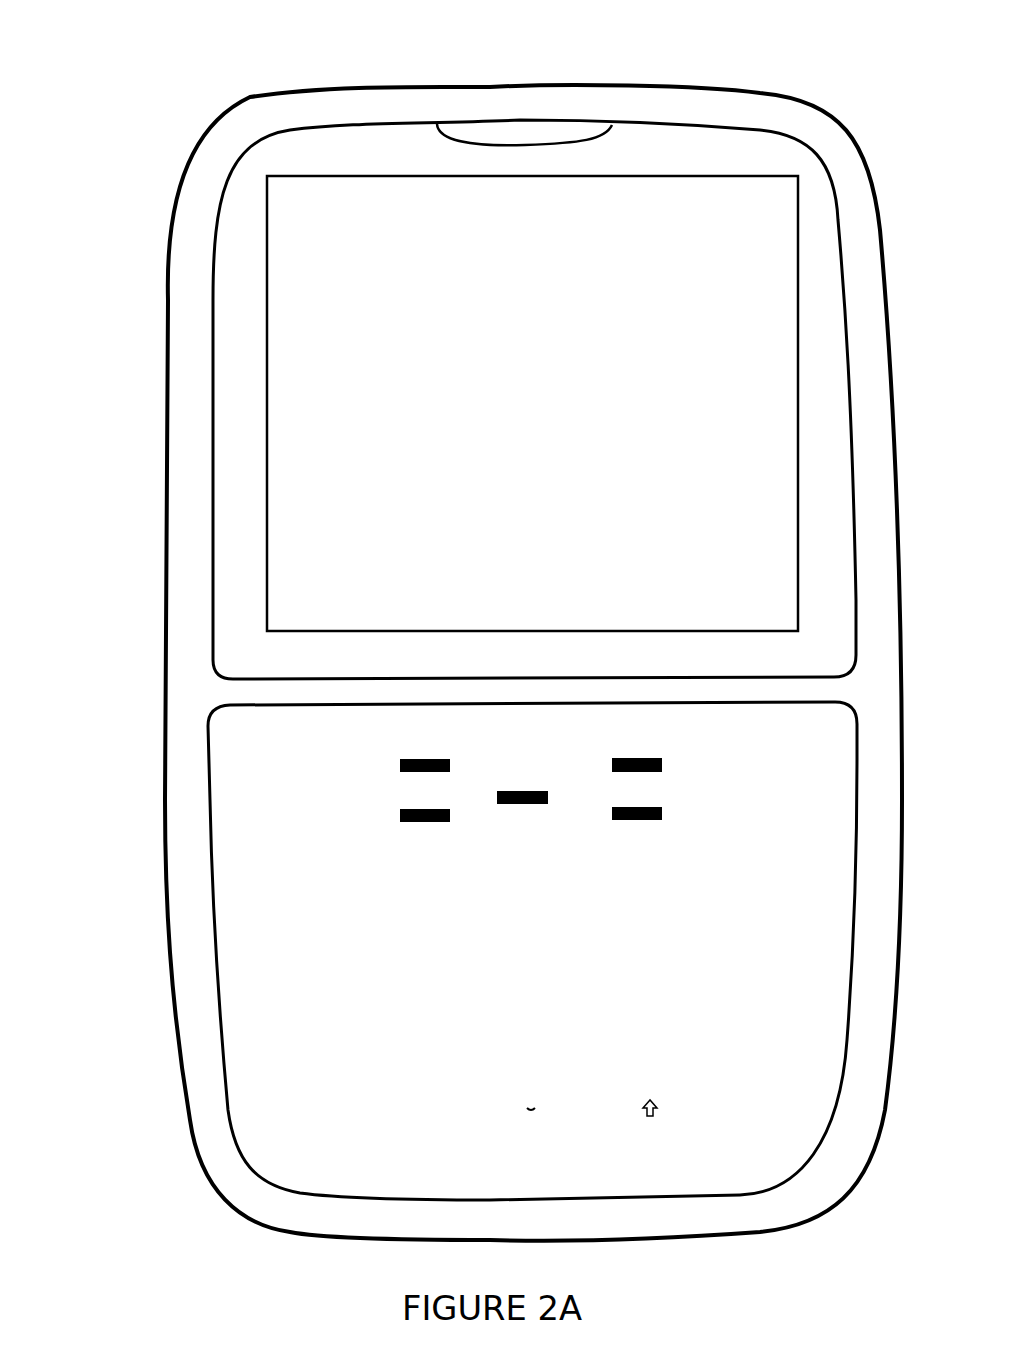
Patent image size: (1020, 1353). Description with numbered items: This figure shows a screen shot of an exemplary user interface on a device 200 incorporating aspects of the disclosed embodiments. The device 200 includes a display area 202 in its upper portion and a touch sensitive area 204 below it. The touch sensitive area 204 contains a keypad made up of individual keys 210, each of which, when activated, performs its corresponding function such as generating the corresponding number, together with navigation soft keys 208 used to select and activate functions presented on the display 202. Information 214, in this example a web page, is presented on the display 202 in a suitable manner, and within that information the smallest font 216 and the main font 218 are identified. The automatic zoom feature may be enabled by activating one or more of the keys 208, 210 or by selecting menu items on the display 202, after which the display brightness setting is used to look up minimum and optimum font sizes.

The device 200 is at (592, 60).
The display area 202 is at (232, 312).
The touch sensitive area 204 is at (316, 820).
The navigation soft keys 208 is at (722, 777).
The keys 210 is at (328, 961).
The information 214 is at (533, 240).
The smallest font 216 is at (373, 385).
The main font 218 is at (503, 482).